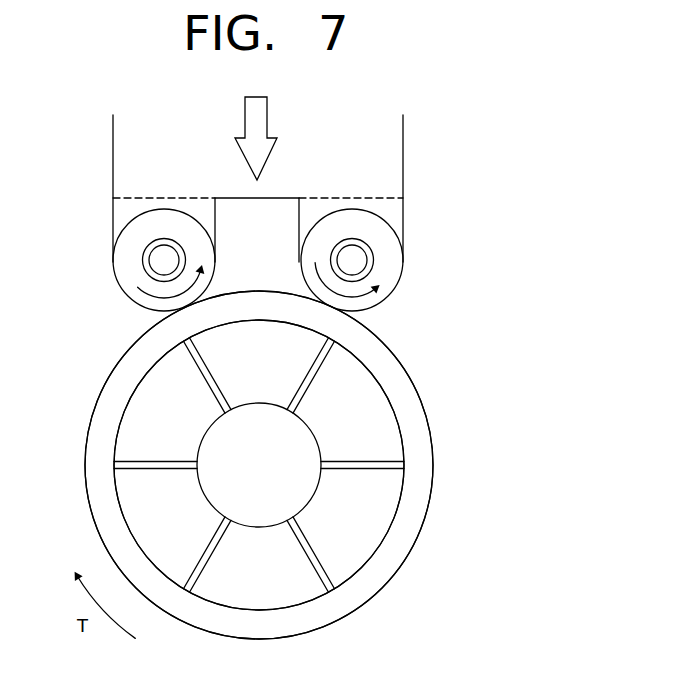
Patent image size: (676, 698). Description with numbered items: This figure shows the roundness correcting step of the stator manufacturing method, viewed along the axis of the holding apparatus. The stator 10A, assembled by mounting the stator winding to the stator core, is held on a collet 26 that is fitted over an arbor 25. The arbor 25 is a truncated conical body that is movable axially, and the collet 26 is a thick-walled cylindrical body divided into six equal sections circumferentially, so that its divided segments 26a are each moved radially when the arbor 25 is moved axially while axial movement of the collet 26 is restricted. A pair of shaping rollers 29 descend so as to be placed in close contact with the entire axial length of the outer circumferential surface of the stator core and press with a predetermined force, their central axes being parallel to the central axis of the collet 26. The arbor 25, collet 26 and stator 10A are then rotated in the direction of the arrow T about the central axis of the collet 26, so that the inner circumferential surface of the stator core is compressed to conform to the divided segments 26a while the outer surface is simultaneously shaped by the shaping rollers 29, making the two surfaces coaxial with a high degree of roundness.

The stator 10A is at (281, 465).
The arbor 25 is at (217, 450).
The collet 26 is at (388, 538).
The divided segments 26a is at (373, 502).
The shaping rollers 29 is at (133, 245).